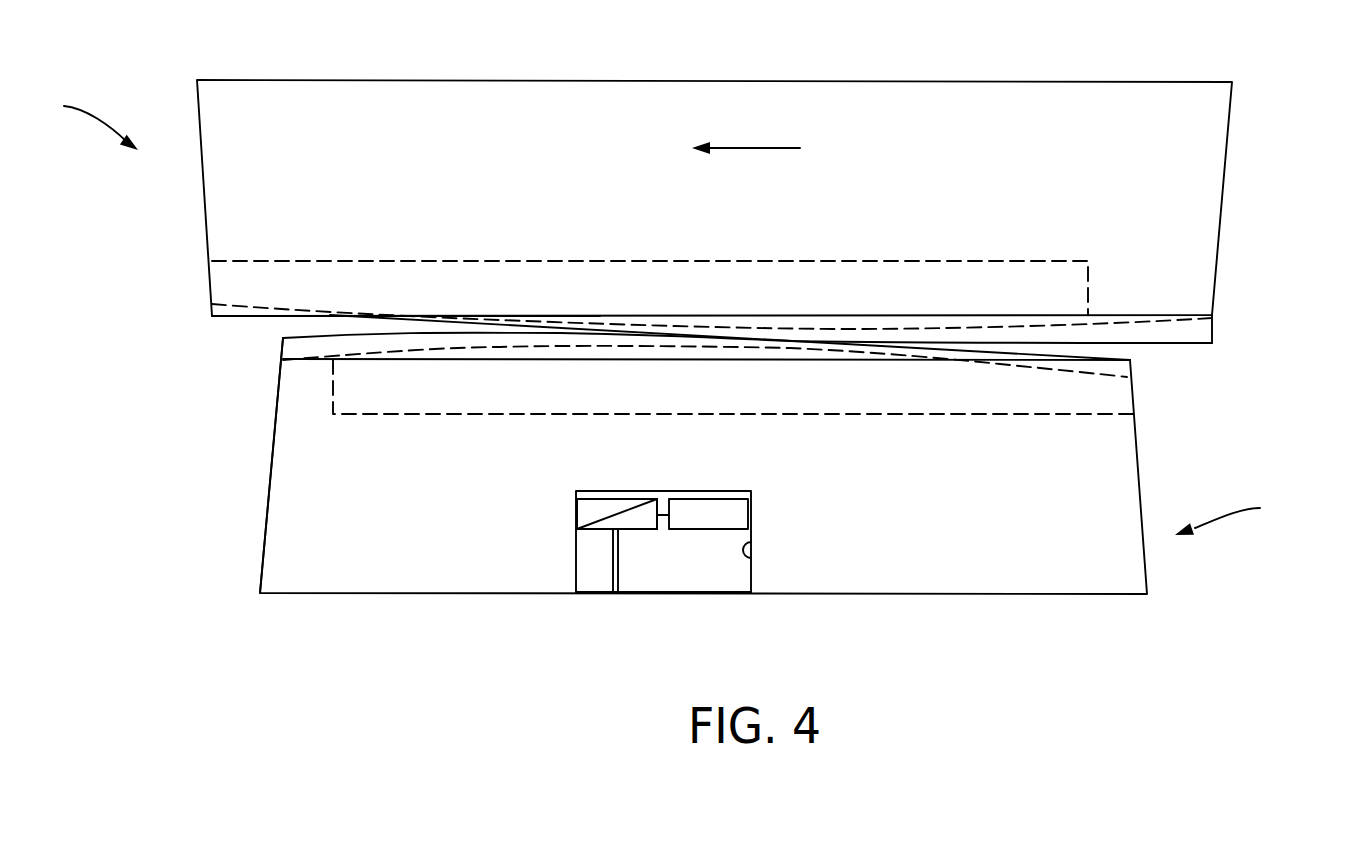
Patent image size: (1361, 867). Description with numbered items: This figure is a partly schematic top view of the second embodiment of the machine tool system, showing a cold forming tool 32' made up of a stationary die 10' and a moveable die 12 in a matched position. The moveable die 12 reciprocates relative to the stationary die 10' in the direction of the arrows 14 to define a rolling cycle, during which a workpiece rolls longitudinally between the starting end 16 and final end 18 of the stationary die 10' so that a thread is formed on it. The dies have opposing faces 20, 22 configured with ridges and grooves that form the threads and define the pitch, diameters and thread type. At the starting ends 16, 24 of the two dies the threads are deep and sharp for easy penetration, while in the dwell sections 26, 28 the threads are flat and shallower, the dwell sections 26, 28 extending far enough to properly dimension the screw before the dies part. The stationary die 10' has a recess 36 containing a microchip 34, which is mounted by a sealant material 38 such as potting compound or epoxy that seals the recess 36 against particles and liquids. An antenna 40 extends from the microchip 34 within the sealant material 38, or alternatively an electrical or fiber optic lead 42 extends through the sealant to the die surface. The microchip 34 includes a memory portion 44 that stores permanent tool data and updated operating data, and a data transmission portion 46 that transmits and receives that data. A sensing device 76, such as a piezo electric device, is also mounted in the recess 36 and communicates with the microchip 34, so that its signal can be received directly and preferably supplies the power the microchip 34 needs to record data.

The stationary die 10' is at (1234, 516).
The moveable die 12 is at (1262, 238).
The arrows 14 is at (768, 148).
The starting end 16 is at (1135, 397).
The final end 18 is at (275, 440).
The opposing face 20 is at (843, 358).
The opposing face 22 is at (883, 320).
The starting end 24 is at (212, 316).
The dwell section 26 is at (283, 338).
The dwell section 28 is at (1212, 343).
The cold forming tool 32' is at (86, 122).
The microchip 34 is at (596, 511).
The recess 36 is at (748, 560).
The sealant material 38 is at (720, 583).
The antenna 40 is at (612, 568).
The electrical or fiber optic lead 42 is at (622, 578).
The memory portion 44 is at (608, 507).
The data transmission portion 46 is at (637, 530).
The sensing device 76 is at (702, 507).